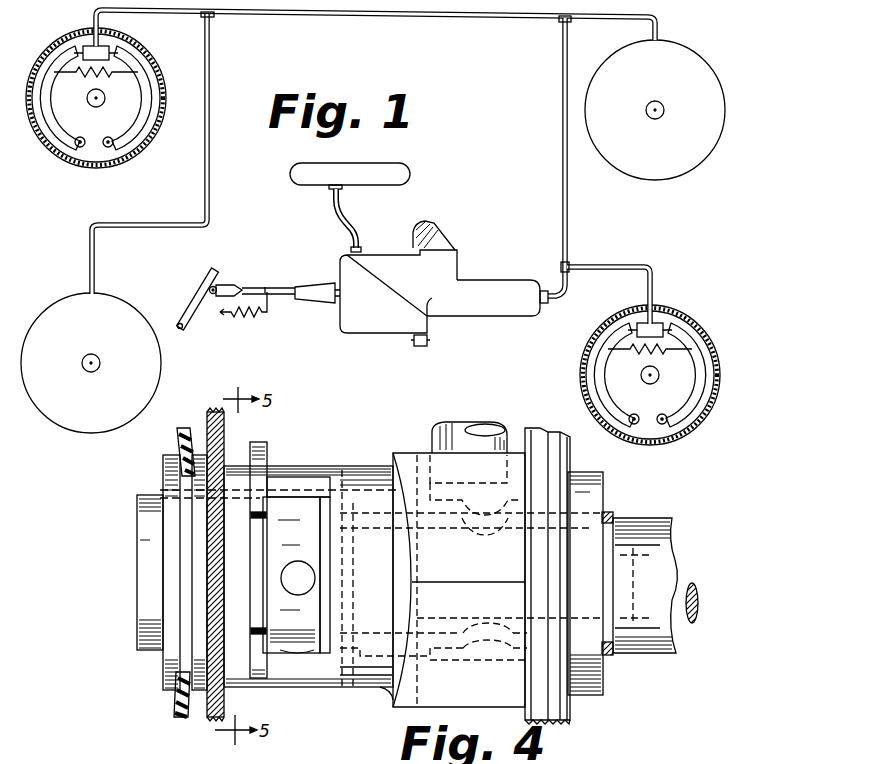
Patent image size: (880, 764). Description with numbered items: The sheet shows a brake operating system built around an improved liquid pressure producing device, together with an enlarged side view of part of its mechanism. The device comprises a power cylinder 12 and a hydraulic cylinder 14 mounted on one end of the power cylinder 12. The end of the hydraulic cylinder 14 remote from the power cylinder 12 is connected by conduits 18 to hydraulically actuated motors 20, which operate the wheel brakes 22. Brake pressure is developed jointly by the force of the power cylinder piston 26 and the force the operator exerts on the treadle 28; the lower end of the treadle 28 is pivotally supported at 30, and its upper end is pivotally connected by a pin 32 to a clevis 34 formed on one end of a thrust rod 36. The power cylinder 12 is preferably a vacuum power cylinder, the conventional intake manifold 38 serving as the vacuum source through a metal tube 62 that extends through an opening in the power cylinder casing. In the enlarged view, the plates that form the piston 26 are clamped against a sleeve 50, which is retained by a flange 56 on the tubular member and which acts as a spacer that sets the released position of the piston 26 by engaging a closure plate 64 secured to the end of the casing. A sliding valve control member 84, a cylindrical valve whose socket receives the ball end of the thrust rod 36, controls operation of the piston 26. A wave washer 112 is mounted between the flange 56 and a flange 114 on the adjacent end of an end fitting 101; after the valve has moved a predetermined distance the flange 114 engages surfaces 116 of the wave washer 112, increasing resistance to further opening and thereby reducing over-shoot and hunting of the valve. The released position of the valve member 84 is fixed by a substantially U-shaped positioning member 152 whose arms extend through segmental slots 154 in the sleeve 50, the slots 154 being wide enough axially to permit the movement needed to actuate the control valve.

In FIG. 1, the power cylinder 12 is at (370, 260).
In FIG. 1, the hydraulic cylinder 14 is at (485, 286).
In FIG. 1, the conduits 18 is at (400, 18).
In FIG. 1, the hydraulically actuated motors 20 is at (90, 40).
In FIG. 1, the wheel brakes 22 is at (158, 72).
In FIG. 4, the power cylinder piston 26 is at (550, 700).
In FIG. 1, the treadle 28 is at (205, 289).
In FIG. 1, the pivotal support 30 is at (183, 330).
In FIG. 1, the pin 32 is at (216, 285).
In FIG. 1, the clevis 34 is at (240, 288).
In FIG. 1, the thrust rod 36 is at (296, 276).
In FIG. 1, the intake manifold 38 is at (395, 172).
In FIG. 4, the sleeve 50 is at (358, 688).
In FIG. 4, the flange 56 is at (353, 503).
In FIG. 1, the metal tube 62 is at (351, 249).
In FIG. 4, the closure plate 64 is at (210, 720).
In FIG. 4, the sliding valve control member 84 is at (686, 560).
In FIG. 4, the end fitting 101 is at (145, 652).
In FIG. 4, the wave washer 112 is at (347, 614).
In FIG. 4, the flange 114 is at (310, 660).
In FIG. 4, the surfaces 116 is at (343, 468).
In FIG. 4, the U-shaped positioning member 152 is at (268, 444).
In FIG. 4, the segmental slots 154 is at (290, 484).